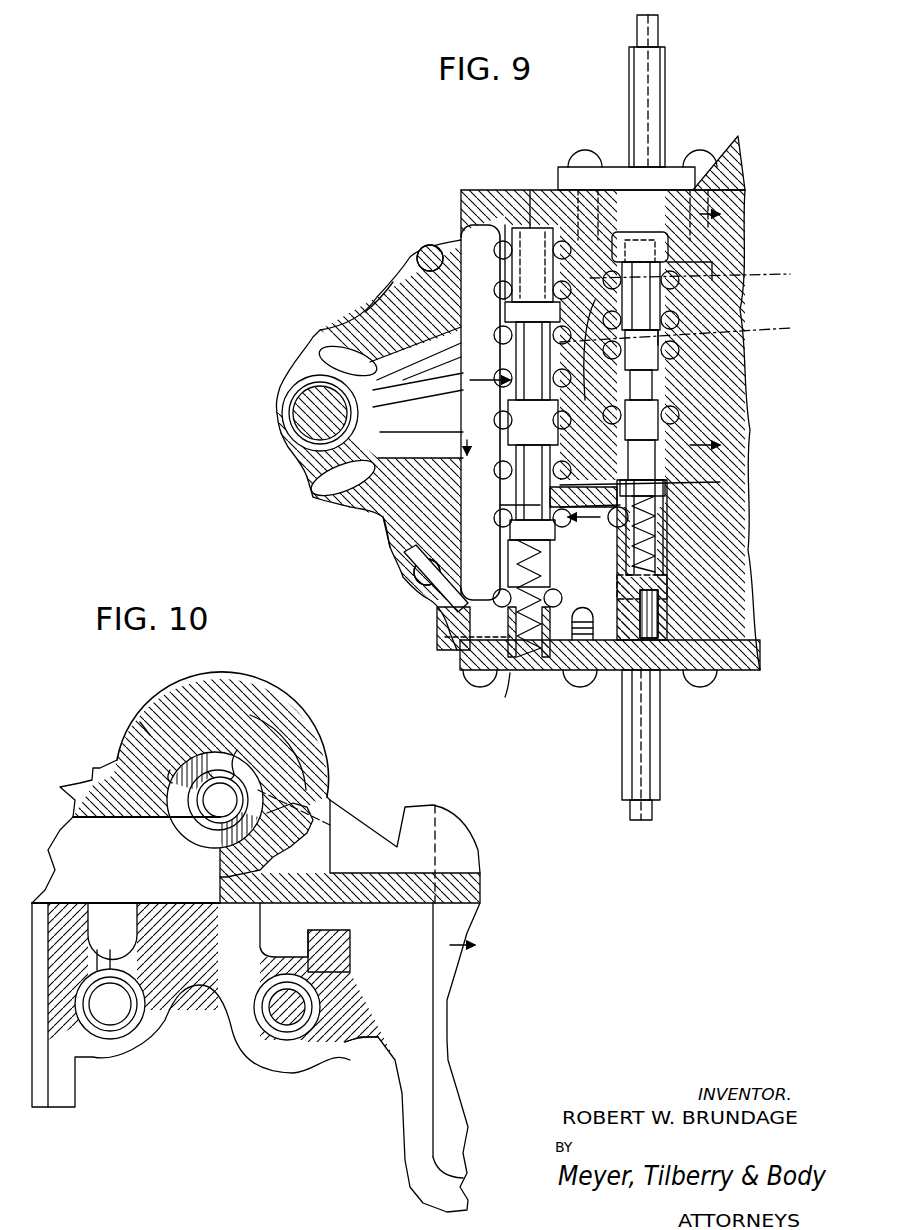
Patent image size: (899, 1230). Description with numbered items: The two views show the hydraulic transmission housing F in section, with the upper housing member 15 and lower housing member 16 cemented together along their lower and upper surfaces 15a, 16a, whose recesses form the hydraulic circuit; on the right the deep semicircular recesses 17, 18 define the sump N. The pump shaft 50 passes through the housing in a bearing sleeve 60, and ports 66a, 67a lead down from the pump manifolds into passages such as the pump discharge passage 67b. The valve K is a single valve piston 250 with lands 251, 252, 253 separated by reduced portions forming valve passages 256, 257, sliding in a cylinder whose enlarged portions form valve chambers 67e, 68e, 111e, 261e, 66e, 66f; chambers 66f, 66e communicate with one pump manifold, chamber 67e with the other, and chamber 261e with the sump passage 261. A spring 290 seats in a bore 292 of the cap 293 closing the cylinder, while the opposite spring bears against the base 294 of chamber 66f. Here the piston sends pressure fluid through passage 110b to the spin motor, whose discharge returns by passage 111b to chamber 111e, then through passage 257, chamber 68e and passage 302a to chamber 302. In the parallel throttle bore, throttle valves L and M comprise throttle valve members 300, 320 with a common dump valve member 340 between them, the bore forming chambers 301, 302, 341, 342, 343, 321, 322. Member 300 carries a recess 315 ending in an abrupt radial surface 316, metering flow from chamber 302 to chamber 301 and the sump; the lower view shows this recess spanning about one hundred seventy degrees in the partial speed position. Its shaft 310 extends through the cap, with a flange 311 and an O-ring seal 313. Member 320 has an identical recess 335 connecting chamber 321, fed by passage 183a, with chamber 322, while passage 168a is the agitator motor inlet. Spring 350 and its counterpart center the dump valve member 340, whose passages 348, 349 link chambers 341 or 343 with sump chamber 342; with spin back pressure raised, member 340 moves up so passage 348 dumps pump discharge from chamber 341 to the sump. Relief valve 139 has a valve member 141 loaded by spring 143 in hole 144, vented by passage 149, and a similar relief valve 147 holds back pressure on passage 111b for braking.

In FIG. 9, the throttle valve M is at (670, 68).
In FIG. 9, the valve chamber 322 is at (712, 210).
In FIG. 9, the deep recess 17 is at (722, 222).
In FIG. 10, the deep recess 17 is at (470, 850).
In FIG. 9, the sump N is at (722, 232).
In FIG. 10, the sump N is at (478, 945).
In FIG. 9, the throttle valve member 320 is at (645, 252).
In FIG. 9, the recess 335 is at (670, 280).
In FIG. 9, the passage 183a is at (714, 273).
In FIG. 9, the valve chamber 321 is at (672, 292).
In FIG. 9, the valve passage 349 is at (672, 330).
In FIG. 9, the passage 168a is at (698, 328).
In FIG. 9, the valve chamber 343 is at (665, 354).
In FIG. 9, the dump valve member 340 is at (660, 378).
In FIG. 9, the sump passage 261 is at (790, 388).
In FIG. 9, the valve chamber 342 is at (665, 418).
In FIG. 9, the valve chamber 341 is at (722, 446).
In FIG. 9, the valve passage 348 is at (665, 466).
In FIG. 9, the passage 111b is at (725, 492).
In FIG. 9, the valve chamber 302 is at (665, 515).
In FIG. 10, the valve chamber 302 is at (150, 760).
In FIG. 9, the recess 315 is at (672, 538).
In FIG. 10, the recess 315 is at (268, 770).
In FIG. 9, the helical spring 350 is at (668, 556).
In FIG. 10, the helical spring 350 is at (220, 773).
In FIG. 9, the valve chamber 301 is at (675, 580).
In FIG. 10, the valve chamber 301 is at (278, 810).
In FIG. 9, the throttle valve member 300 is at (672, 598).
In FIG. 10, the throttle valve member 300 is at (258, 798).
In FIG. 9, the O-ring seal 313 is at (700, 628).
In FIG. 9, the flange 311 is at (720, 660).
In FIG. 9, the shaft 310 is at (645, 740).
In FIG. 9, the throttle valve L is at (665, 726).
In FIG. 10, the throttle valve L is at (172, 838).
In FIG. 9, the helical coil spring 290 is at (562, 672).
In FIG. 9, the bore 292 is at (505, 697).
In FIG. 9, the cap 293 is at (462, 672).
In FIG. 9, the base 294 is at (530, 225).
In FIG. 9, the valve passage 256 is at (512, 310).
In FIG. 9, the land 253 is at (477, 235).
In FIG. 9, the land 251 is at (414, 572).
In FIG. 9, the valve passage 257 is at (512, 530).
In FIG. 9, the land 252 is at (505, 410).
In FIG. 9, the valve piston 250 is at (462, 438).
In FIG. 9, the valve chamber 111e is at (505, 400).
In FIG. 9, the passage 110b is at (505, 372).
In FIG. 9, the valve chamber 261e is at (495, 345).
In FIG. 9, the valve chamber 66e is at (505, 296).
In FIG. 9, the valve chamber 66f is at (520, 255).
In FIG. 9, the port 66a is at (322, 348).
In FIG. 9, the port 67a is at (318, 473).
In FIG. 9, the passage 67b is at (365, 508).
In FIG. 9, the valve chamber 67e is at (440, 612).
In FIG. 9, the valve chamber 68e is at (500, 508).
In FIG. 9, the bearing sleeve 60 is at (282, 410).
In FIG. 9, the shaft 50 is at (292, 436).
In FIG. 9, the upper housing member 15 is at (385, 300).
In FIG. 10, the upper housing member 15 is at (92, 784).
In FIG. 9, the lower surface 15a is at (390, 532).
In FIG. 10, the lower surface 15a is at (150, 905).
In FIG. 9, the housing F is at (392, 282).
In FIG. 10, the housing F is at (140, 722).
In FIG. 9, the valve means K is at (496, 538).
In FIG. 10, the radially extending surface 316 is at (240, 750).
In FIG. 10, the passage 302a is at (70, 830).
In FIG. 10, the upper surface 16a is at (72, 900).
In FIG. 10, the lower housing member 16 is at (142, 1045).
In FIG. 10, the deep recess 18 is at (455, 975).
In FIG. 10, the passage 149 is at (310, 965).
In FIG. 10, the pressure relief valve 147 is at (115, 1020).
In FIG. 10, the helical coiled spring 143 is at (254, 1032).
In FIG. 10, the pressure relief valve 139 is at (274, 1030).
In FIG. 10, the valve member 141 is at (290, 1020).
In FIG. 10, the hole 144 is at (315, 1035).